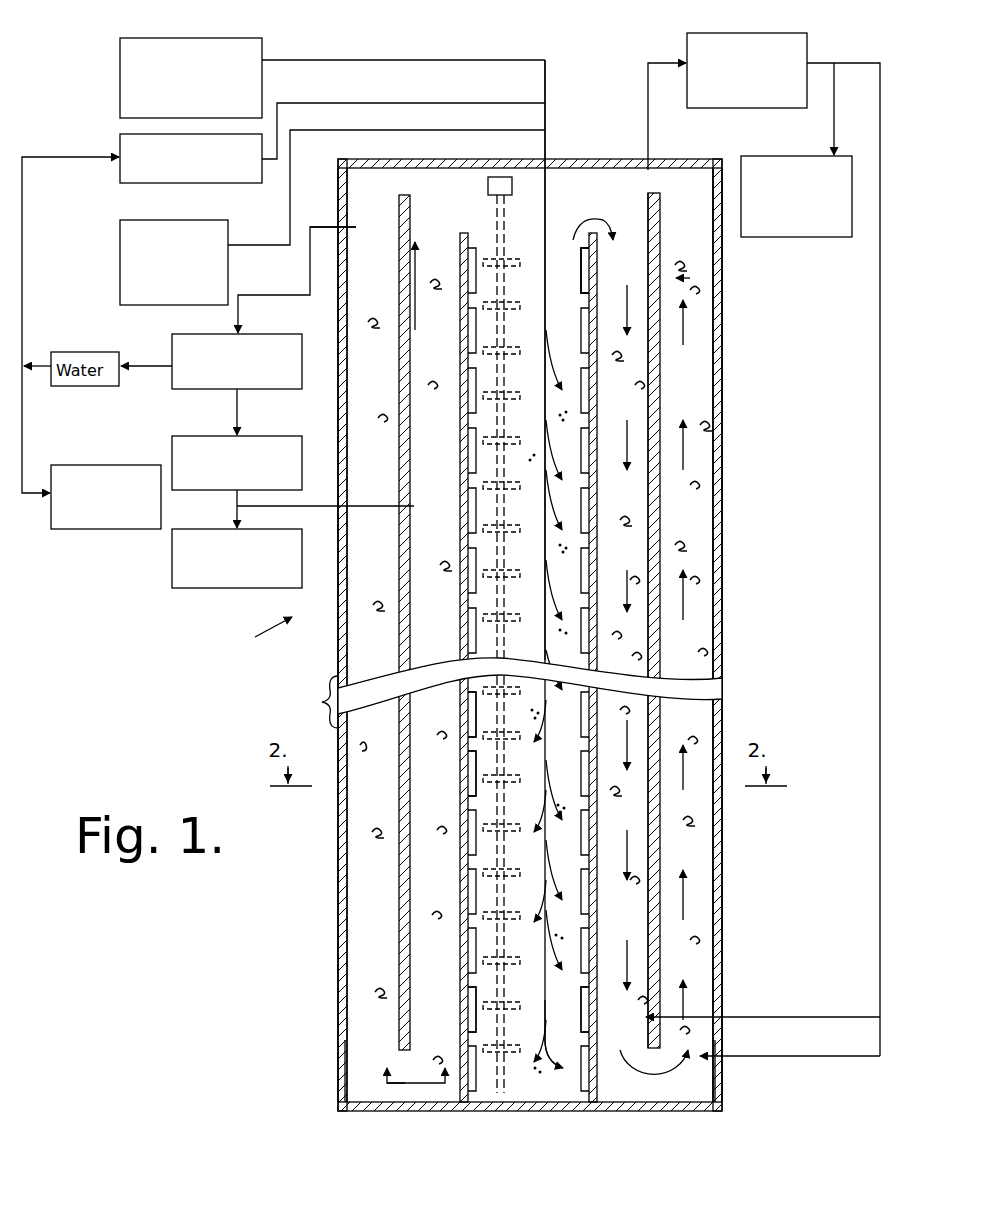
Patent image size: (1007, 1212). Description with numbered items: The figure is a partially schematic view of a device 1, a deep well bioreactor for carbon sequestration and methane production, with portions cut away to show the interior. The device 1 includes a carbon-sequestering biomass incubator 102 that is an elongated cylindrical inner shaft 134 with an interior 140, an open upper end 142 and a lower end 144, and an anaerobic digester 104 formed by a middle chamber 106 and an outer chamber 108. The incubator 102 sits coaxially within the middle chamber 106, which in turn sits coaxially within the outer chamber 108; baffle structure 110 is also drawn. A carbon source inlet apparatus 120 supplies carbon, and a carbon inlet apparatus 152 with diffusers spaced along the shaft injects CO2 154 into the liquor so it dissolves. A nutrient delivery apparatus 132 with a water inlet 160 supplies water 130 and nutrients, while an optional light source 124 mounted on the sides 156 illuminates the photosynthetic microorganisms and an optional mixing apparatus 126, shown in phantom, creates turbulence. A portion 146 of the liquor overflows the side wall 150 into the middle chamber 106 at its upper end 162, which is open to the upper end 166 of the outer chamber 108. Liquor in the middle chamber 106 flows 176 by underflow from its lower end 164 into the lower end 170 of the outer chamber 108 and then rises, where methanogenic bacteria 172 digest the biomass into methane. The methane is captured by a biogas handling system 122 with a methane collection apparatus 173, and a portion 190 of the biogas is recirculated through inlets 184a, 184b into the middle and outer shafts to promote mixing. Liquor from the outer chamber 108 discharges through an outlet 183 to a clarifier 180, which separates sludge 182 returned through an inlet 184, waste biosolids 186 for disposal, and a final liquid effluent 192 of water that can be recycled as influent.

The device 1 is at (264, 633).
The carbon-sequestering biomass incubator 102 is at (536, 1102).
The anaerobic digester 104 is at (374, 1109).
The middle chamber 106 is at (640, 359).
The outer chamber 108 is at (710, 397).
The baffle plate 110 is at (472, 1102).
The carbon source inlet apparatus 120 is at (120, 60).
The biogas handling system 122 is at (687, 40).
The light source 124 is at (472, 1020).
The mixing apparatus 126 is at (488, 186).
The water 130 is at (120, 140).
The nutrient delivery apparatus 132 is at (120, 246).
The inner shaft 134 is at (464, 234).
The interior 140 is at (554, 564).
The upper end 142 is at (530, 235).
The lower end 144 is at (576, 1100).
The overflow portion 146 is at (604, 222).
The side wall 150 is at (586, 265).
The carbon inlet apparatus 152 is at (614, 1044).
The CO2 154 is at (558, 544).
The sides 156 is at (584, 270).
The water inlet 160 is at (545, 166).
The upper end of middle chamber 162 is at (410, 196).
The lower end of middle chamber 164 is at (650, 958).
The upper end of outer shaft 166 is at (706, 238).
The lower end of outer shaft 170 is at (354, 1059).
The methanogenic bacteria 172 is at (690, 278).
The methane collection apparatus 173 is at (758, 157).
The underflow 176 is at (672, 1076).
The clarifier 180 is at (174, 334).
The sludge 182 is at (264, 436).
The outlet 183 is at (346, 228).
The inlet 184 is at (346, 506).
The biogas inlet 184a is at (655, 1010).
The biogas inlet 184b is at (718, 1056).
The waste biosolids 186 is at (172, 575).
The recirculated biogas portion 190 is at (880, 840).
The effluent 192 is at (76, 465).